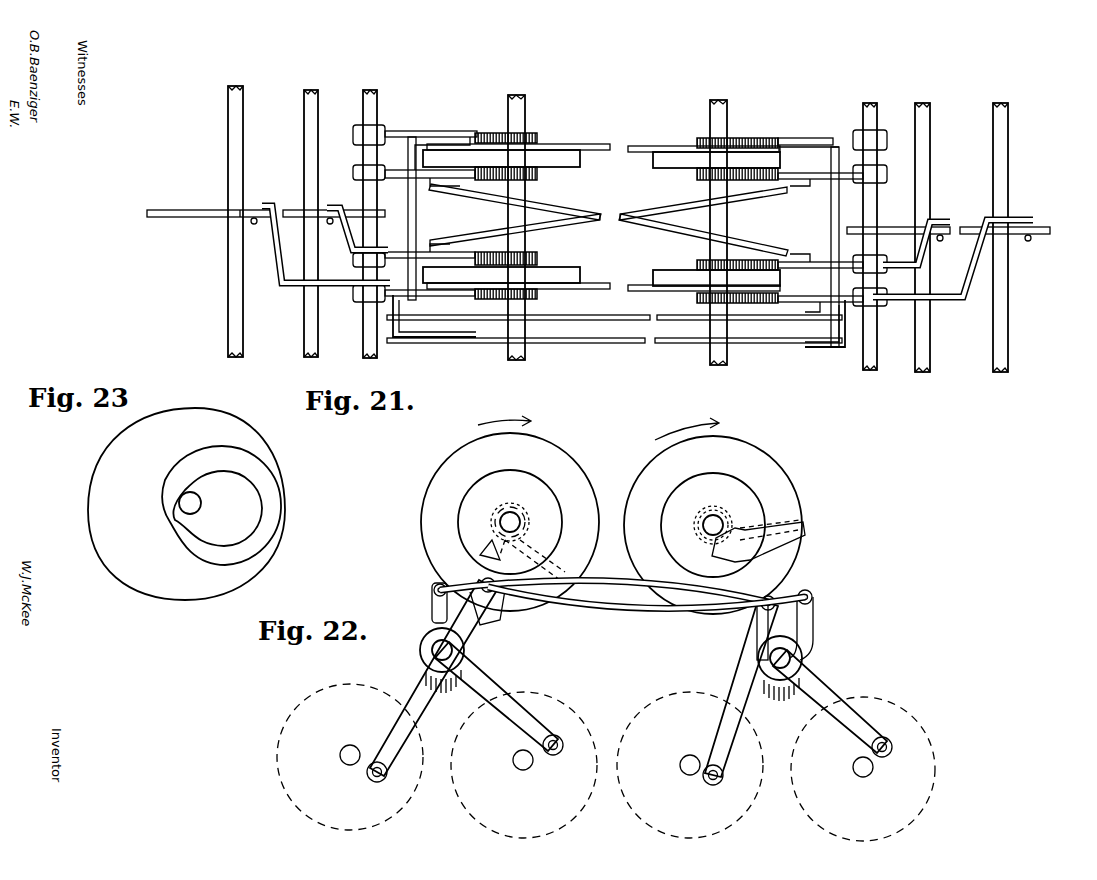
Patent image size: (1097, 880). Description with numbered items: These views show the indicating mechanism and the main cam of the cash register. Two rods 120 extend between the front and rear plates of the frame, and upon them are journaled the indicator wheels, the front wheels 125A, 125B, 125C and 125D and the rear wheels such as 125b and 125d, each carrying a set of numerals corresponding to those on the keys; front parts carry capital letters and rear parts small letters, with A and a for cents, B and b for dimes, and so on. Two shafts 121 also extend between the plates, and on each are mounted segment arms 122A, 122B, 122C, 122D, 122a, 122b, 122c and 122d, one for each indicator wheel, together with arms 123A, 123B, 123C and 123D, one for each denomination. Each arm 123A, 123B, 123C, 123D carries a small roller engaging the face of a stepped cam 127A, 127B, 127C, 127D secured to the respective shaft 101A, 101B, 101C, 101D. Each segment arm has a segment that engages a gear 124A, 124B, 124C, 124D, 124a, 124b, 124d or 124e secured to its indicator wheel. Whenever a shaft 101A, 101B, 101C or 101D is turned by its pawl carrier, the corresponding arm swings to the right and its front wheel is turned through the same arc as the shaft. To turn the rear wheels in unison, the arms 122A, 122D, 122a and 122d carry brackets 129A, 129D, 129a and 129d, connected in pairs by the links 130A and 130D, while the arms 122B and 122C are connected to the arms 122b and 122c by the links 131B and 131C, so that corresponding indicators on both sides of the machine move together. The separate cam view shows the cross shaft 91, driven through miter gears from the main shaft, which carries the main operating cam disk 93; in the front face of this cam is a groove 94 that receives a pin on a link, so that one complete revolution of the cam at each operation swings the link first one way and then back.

In FIG. 21, the shaft 101A is at (1008, 148).
In FIG. 22, the shaft 101A is at (866, 768).
In FIG. 21, the shaft 101B is at (930, 163).
In FIG. 22, the shaft 101B is at (686, 765).
In FIG. 21, the shaft 101C is at (304, 160).
In FIG. 22, the shaft 101C is at (520, 760).
In FIG. 21, the shaft 101D is at (228, 292).
In FIG. 22, the shaft 101D is at (345, 755).
In FIG. 21, the rod 120 is at (525, 110).
In FIG. 22, the rod 120 is at (512, 520).
In FIG. 21, the shaft 121 is at (372, 345).
In FIG. 22, the shaft 121 is at (440, 649).
In FIG. 21, the segment arm 122a is at (445, 131).
In FIG. 21, the segment arm 122b is at (445, 190).
In FIG. 21, the segment arm 122c is at (808, 186).
In FIG. 21, the segment arm 122d is at (805, 134).
In FIG. 21, the segment arm 122A is at (815, 308).
In FIG. 22, the segment arm 122A is at (758, 541).
In FIG. 21, the segment arm 122B is at (785, 260).
In FIG. 21, the segment arm 122C is at (450, 252).
In FIG. 21, the segment arm 122D is at (445, 296).
In FIG. 22, the segment arm 122D is at (522, 560).
In FIG. 21, the arm 123A is at (985, 266).
In FIG. 22, the arm 123A is at (825, 680).
In FIG. 21, the arm 123B is at (926, 255).
In FIG. 22, the arm 123B is at (752, 705).
In FIG. 21, the arm 123C is at (340, 248).
In FIG. 22, the arm 123C is at (480, 677).
In FIG. 21, the arm 123D is at (284, 290).
In FIG. 22, the arm 123D is at (416, 688).
In FIG. 21, the gear 124a is at (530, 138).
In FIG. 21, the gear 124b is at (537, 176).
In FIG. 21, the gear 124d is at (697, 142).
In FIG. 21, the gear 124e is at (697, 178).
In FIG. 21, the gear 124A is at (697, 299).
In FIG. 22, the gear 124A is at (728, 520).
In FIG. 21, the gear 124B is at (697, 264).
In FIG. 21, the gear 124C is at (537, 258).
In FIG. 21, the gear 124D is at (537, 294).
In FIG. 22, the gear 124D is at (494, 524).
In FIG. 21, the indicator wheel 125b is at (516, 155).
In FIG. 21, the indicator wheel 125d is at (660, 166).
In FIG. 22, the indicator wheel 125A is at (755, 510).
In FIG. 21, the indicator wheel 125B is at (704, 280).
In FIG. 22, the indicator wheel 125B is at (760, 465).
In FIG. 21, the indicator wheel 125C is at (516, 278).
In FIG. 22, the indicator wheel 125C is at (548, 460).
In FIG. 22, the indicator wheel 125D is at (472, 512).
In FIG. 21, the cam 127A is at (1048, 228).
In FIG. 21, the cam 127B is at (950, 225).
In FIG. 21, the cam 127C is at (292, 210).
In FIG. 21, the cam 127D is at (195, 210).
In FIG. 21, the bracket 129a is at (397, 218).
In FIG. 22, the bracket 129a is at (432, 603).
In FIG. 21, the bracket 129d is at (840, 210).
In FIG. 22, the bracket 129d is at (815, 615).
In FIG. 21, the bracket 129A is at (808, 350).
In FIG. 22, the bracket 129A is at (758, 630).
In FIG. 21, the bracket 129D is at (400, 325).
In FIG. 22, the bracket 129D is at (488, 615).
In FIG. 21, the link 130A is at (614, 324).
In FIG. 22, the link 130A is at (652, 598).
In FIG. 21, the link 130D is at (570, 345).
In FIG. 22, the link 130D is at (606, 610).
In FIG. 21, the link 131B is at (650, 225).
In FIG. 21, the link 131C is at (555, 226).
In FIG. 23, the cross shaft 91 is at (186, 505).
In FIG. 23, the main operating cam disk 93 is at (186, 504).
In FIG. 23, the groove 94 is at (235, 556).